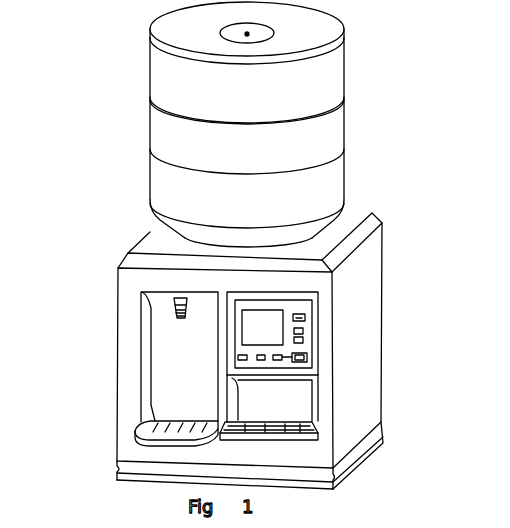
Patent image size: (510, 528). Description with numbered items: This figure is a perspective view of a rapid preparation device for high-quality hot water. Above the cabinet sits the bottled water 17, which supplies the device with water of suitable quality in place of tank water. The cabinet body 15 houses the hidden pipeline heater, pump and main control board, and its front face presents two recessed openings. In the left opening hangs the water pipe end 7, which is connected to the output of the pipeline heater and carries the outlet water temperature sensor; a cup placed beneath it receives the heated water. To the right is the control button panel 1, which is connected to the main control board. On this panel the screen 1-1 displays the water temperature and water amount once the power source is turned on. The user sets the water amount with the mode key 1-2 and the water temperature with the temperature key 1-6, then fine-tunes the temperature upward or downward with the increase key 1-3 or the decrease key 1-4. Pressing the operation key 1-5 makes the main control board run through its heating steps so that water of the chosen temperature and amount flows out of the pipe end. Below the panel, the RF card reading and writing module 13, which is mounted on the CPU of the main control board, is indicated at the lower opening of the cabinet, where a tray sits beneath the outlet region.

The bottled water 17 is at (185, 137).
The housing 15 is at (128, 370).
The water pipe end 7 is at (174, 305).
The control button panel 1 is at (252, 306).
The screen 1-1 is at (268, 322).
The mode key 1-2 is at (302, 317).
The increase key 1-3 is at (302, 330).
The decrease key 1-4 is at (302, 340).
The operation key 1-5 is at (298, 357).
The temperature key 1-6 is at (310, 365).
The RF card reading and writing module 13 is at (272, 428).